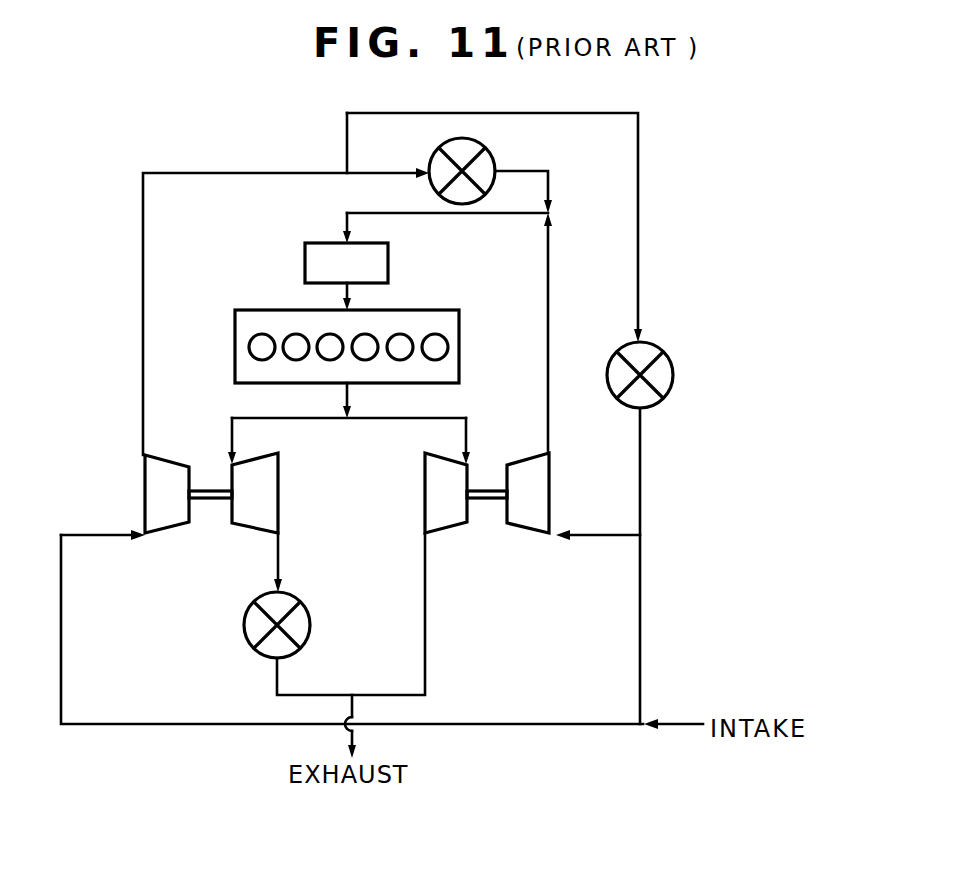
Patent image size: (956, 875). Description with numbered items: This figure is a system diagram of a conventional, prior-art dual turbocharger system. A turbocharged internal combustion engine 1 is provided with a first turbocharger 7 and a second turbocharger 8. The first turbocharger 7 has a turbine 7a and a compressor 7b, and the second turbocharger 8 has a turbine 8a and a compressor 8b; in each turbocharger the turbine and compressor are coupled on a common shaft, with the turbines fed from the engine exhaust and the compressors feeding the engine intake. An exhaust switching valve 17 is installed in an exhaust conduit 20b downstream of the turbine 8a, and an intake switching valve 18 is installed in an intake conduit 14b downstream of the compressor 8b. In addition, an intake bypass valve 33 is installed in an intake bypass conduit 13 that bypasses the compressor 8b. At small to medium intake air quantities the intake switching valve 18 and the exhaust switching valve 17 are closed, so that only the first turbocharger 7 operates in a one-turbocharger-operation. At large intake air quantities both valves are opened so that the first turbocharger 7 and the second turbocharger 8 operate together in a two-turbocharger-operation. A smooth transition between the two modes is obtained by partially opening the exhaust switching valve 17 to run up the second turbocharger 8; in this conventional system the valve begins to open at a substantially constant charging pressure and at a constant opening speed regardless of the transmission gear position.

The internal combustion engine 1 is at (460, 358).
The first turbocharger 7 is at (485, 478).
The turbine 7a is at (430, 501).
The compressor 7b is at (531, 479).
The second turbocharger 8 is at (211, 479).
The turbine 8a is at (268, 490).
The compressor 8b is at (160, 503).
The intake bypass conduit 13 is at (638, 216).
The intake conduit 14b is at (143, 291).
The exhaust switching valve 17 is at (245, 622).
The intake switching valve 18 is at (489, 152).
The exhaust conduit 20b is at (275, 667).
The intake bypass valve 33 is at (672, 358).